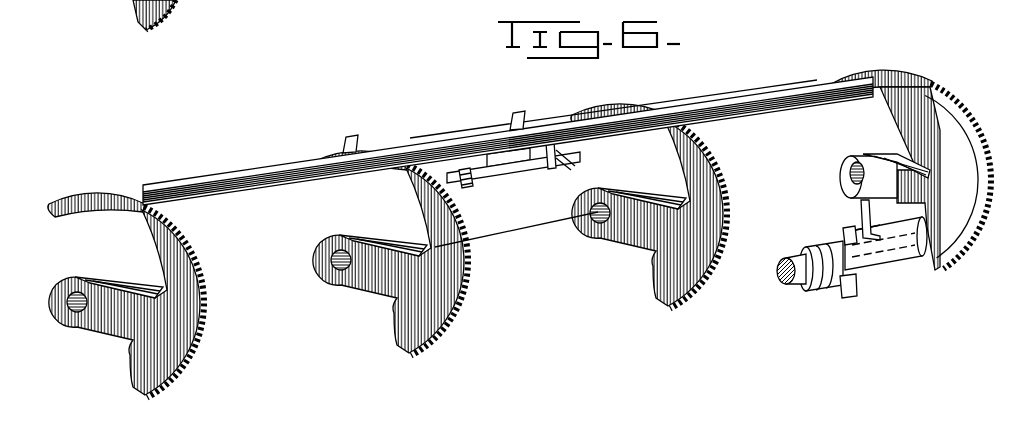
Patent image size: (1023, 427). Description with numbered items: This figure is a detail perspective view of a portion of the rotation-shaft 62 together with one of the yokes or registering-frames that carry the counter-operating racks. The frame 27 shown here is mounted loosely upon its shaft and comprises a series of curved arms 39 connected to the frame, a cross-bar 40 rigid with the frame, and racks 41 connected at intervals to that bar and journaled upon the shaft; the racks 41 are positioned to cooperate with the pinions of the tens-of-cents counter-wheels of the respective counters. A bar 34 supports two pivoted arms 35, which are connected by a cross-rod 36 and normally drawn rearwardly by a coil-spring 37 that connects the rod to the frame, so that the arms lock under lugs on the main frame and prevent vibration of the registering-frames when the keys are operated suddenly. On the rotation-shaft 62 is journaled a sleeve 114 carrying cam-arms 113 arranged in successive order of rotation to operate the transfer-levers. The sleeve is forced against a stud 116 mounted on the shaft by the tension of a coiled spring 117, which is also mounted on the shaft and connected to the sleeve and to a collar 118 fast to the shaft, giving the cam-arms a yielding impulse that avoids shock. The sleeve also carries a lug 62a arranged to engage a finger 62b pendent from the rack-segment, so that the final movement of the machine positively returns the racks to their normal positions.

The frame 27 is at (552, 224).
The bar 34 is at (512, 182).
The pivoted arms 35 is at (348, 143).
The cross-rod 36 is at (566, 168).
The coil-spring 37 is at (472, 192).
The curved arms 39 is at (108, 201).
The cross-bar 40 is at (242, 178).
The racks 41 is at (206, 327).
The rotation-shaft 62 is at (782, 270).
The lug 62a is at (862, 224).
The finger 62b is at (866, 221).
The cam-arms 113 is at (850, 288).
The sleeve 114 is at (905, 262).
The stud 116 is at (899, 234).
The coiled spring 117 is at (846, 233).
The collar 118 is at (818, 282).